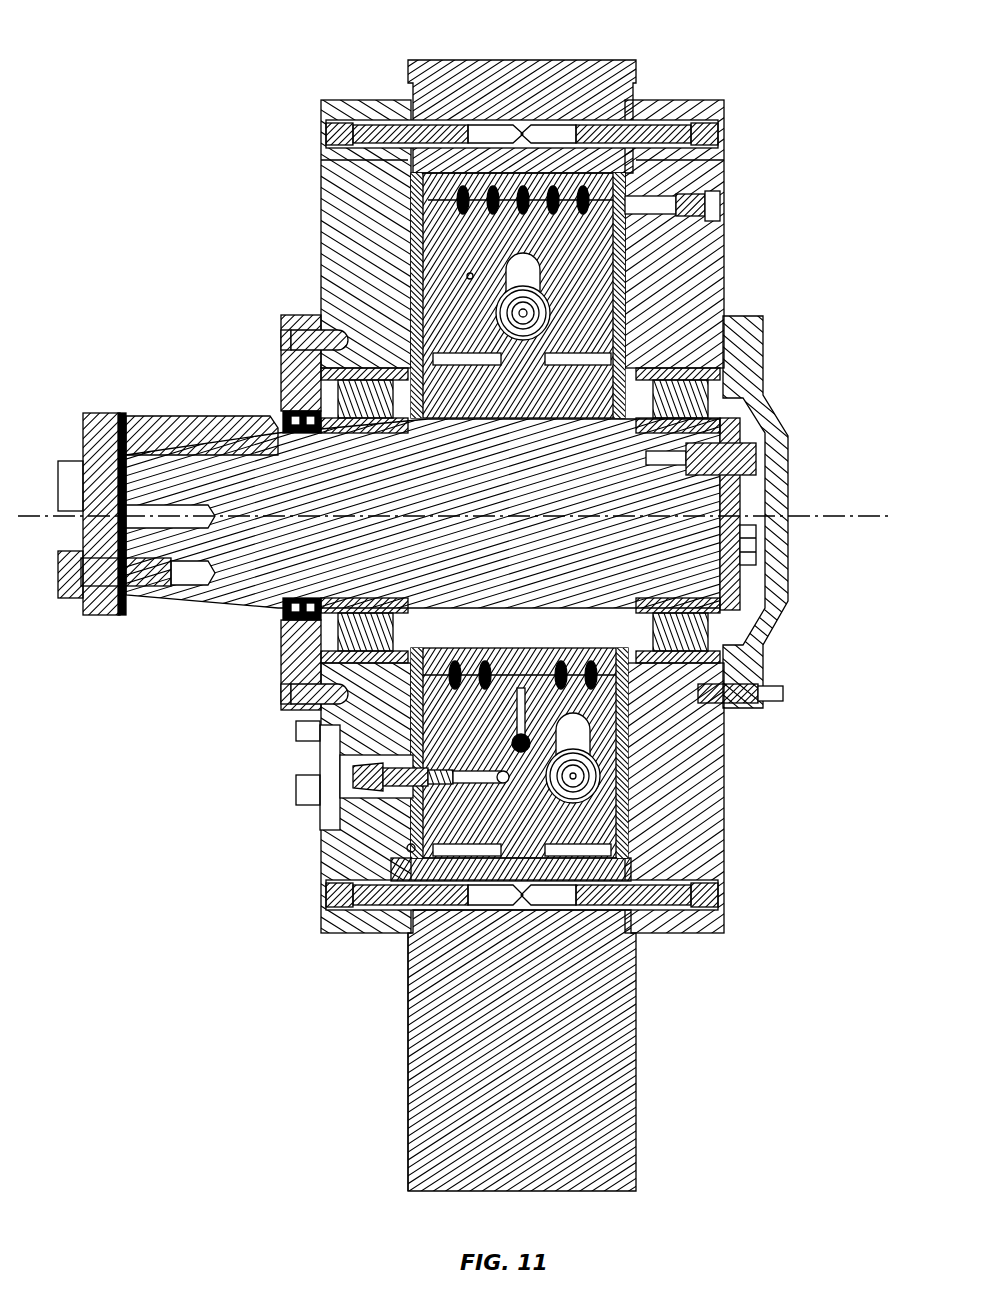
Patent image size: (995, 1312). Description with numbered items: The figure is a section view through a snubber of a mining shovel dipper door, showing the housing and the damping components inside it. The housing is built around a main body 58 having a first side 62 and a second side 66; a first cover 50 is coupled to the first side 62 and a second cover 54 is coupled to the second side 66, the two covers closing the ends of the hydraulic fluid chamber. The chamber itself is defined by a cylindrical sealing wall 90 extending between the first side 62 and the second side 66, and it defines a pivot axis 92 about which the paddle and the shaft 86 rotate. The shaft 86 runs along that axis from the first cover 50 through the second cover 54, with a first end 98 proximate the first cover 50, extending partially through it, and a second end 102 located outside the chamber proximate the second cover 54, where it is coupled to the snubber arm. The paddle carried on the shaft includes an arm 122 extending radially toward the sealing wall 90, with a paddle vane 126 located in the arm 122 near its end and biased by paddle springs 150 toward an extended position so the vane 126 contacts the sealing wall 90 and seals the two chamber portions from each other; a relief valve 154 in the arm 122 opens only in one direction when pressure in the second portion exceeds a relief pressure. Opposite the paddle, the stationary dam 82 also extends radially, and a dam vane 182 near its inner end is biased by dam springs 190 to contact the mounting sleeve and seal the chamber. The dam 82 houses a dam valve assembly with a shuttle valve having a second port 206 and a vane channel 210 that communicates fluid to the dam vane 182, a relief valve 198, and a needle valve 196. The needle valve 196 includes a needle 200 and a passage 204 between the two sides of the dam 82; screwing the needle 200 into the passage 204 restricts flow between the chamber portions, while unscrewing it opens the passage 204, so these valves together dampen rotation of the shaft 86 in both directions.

The first cover 50 is at (716, 850).
The second cover 54 is at (322, 830).
The main body 58 is at (588, 1092).
The first side 62 is at (628, 1004).
The second side 66 is at (400, 1074).
The dam 82 is at (605, 820).
The shaft 86 is at (250, 418).
The sealing wall 90 is at (512, 165).
The pivot axis 92 is at (812, 506).
The first end 98 is at (722, 560).
The second end 102 is at (125, 462).
The arm 122 is at (575, 300).
The paddle vane 126 is at (640, 180).
The paddle springs 150 is at (548, 202).
The relief valve 154 is at (462, 268).
The dam vane 182 is at (718, 662).
The dam springs 190 is at (420, 632).
The needle valve 196 is at (245, 748).
The relief valve 198 is at (598, 788).
The needle 200 is at (355, 766).
The passage 204 is at (500, 766).
The second port 206 is at (503, 716).
The vane channel 210 is at (540, 716).